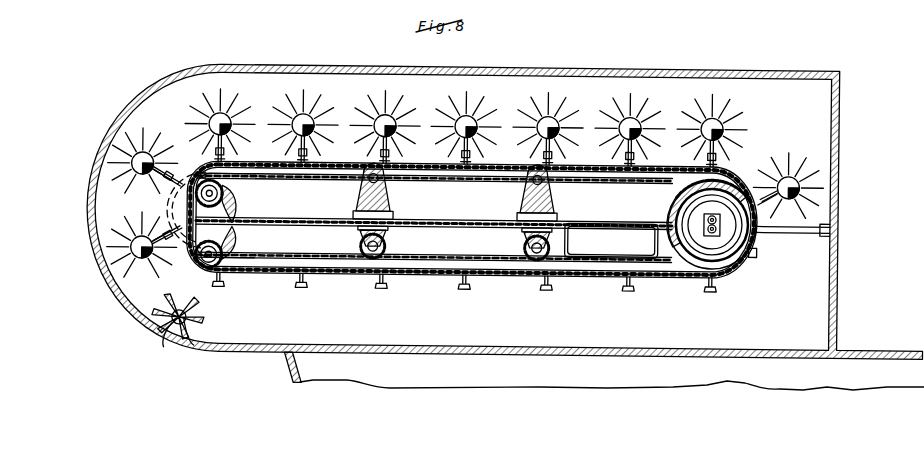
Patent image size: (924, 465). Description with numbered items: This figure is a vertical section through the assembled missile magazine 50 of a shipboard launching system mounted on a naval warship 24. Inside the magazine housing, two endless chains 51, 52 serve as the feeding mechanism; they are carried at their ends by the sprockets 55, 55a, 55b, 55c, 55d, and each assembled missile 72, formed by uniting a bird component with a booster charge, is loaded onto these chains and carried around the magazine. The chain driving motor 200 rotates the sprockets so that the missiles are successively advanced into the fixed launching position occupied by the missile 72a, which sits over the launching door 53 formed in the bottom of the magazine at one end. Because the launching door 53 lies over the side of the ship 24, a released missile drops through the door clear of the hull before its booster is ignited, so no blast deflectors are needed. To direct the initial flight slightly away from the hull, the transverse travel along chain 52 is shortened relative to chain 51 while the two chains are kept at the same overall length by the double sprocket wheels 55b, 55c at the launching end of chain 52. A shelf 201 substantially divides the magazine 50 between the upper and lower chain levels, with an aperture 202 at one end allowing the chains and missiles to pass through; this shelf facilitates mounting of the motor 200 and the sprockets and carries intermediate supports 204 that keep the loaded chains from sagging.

The naval warship 24 is at (856, 381).
The missile magazine 50 is at (196, 97).
The endless chain 51 is at (412, 166).
The endless chain 52 is at (516, 173).
The launching door 53 is at (180, 348).
The sprocket 55 is at (180, 208).
The sprocket 55a is at (725, 183).
The double sprocket wheel 55b is at (256, 180).
The double sprocket wheel 55c is at (262, 249).
The sprocket 55d is at (756, 236).
The assembled missile 72 is at (479, 119).
The missile in launching position 72a is at (204, 322).
The chain driving motor 200 is at (672, 201).
The shelf 201 is at (594, 228).
The aperture 202 is at (810, 217).
The supports 204 is at (384, 205).